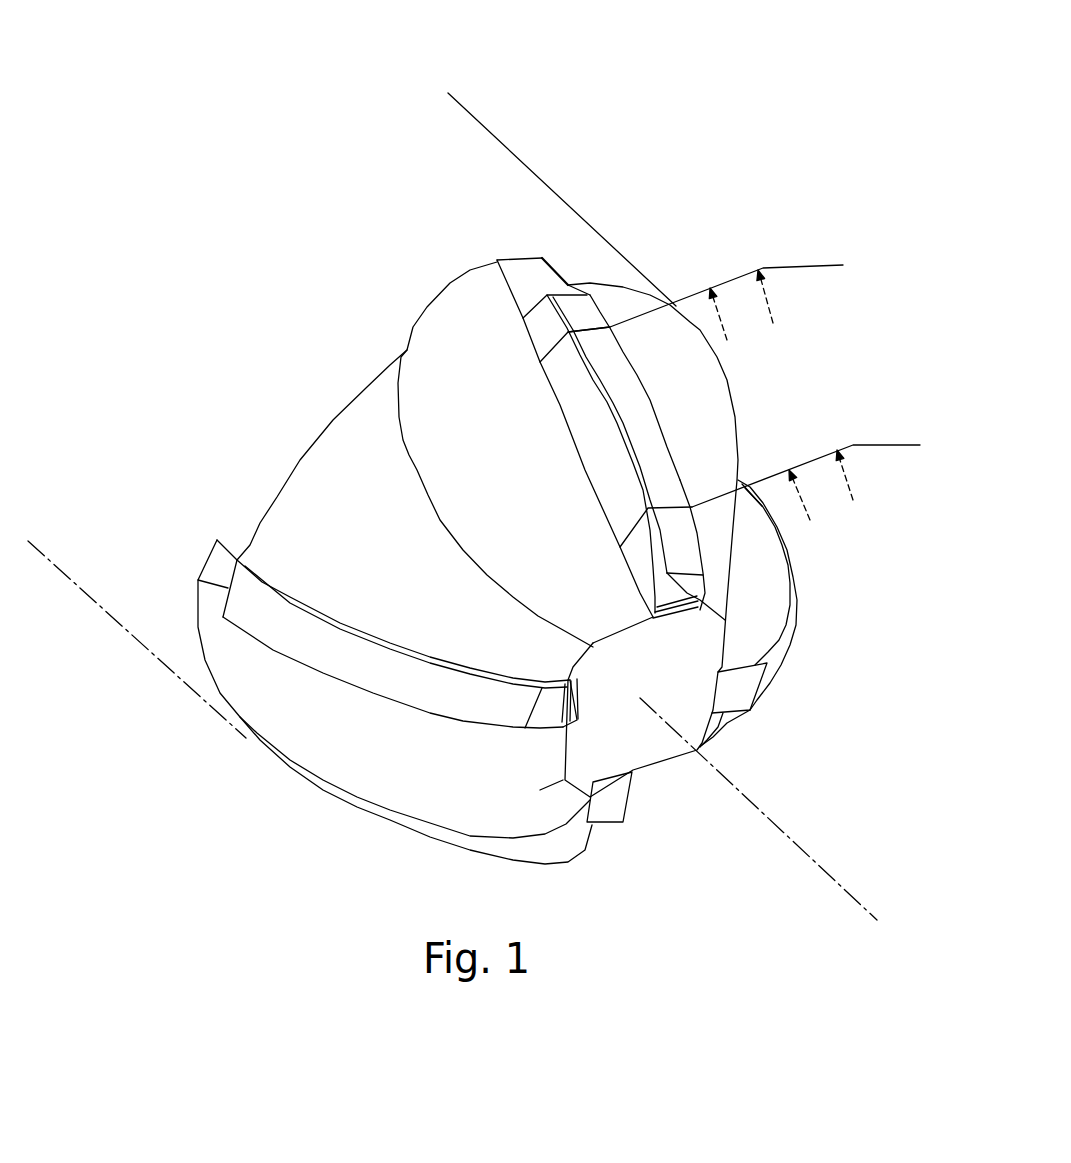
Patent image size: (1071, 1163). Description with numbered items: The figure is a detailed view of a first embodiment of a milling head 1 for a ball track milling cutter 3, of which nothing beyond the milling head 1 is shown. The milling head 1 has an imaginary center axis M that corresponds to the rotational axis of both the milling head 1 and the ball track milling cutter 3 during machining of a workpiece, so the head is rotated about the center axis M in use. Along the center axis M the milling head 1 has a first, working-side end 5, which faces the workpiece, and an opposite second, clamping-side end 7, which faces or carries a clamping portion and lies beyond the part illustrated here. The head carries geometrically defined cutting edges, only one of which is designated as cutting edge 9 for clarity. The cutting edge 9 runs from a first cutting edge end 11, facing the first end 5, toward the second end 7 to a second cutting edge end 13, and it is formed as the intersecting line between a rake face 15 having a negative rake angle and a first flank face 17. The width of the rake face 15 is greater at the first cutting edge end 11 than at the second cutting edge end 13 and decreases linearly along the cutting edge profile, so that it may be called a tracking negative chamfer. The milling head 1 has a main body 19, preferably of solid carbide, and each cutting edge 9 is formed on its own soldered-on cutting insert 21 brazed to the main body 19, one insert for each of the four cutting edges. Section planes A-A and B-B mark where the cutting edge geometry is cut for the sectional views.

The milling head 1 is at (562, 194).
The ball track milling cutter 3 is at (751, 20).
The first, working-side end 5 is at (684, 552).
The second, clamping-side end 7 is at (380, 514).
The cutting edge 9 is at (597, 451).
The first cutting edge end 11 is at (781, 595).
The second cutting edge end 13 is at (537, 263).
The rake face 15 is at (581, 454).
The first flank face 17 is at (693, 387).
The main body 19 is at (137, 639).
The cutting insert 21 is at (750, 505).
The center axis M is at (758, 835).
The section line A-A is at (806, 465).
The section line B-B is at (705, 289).